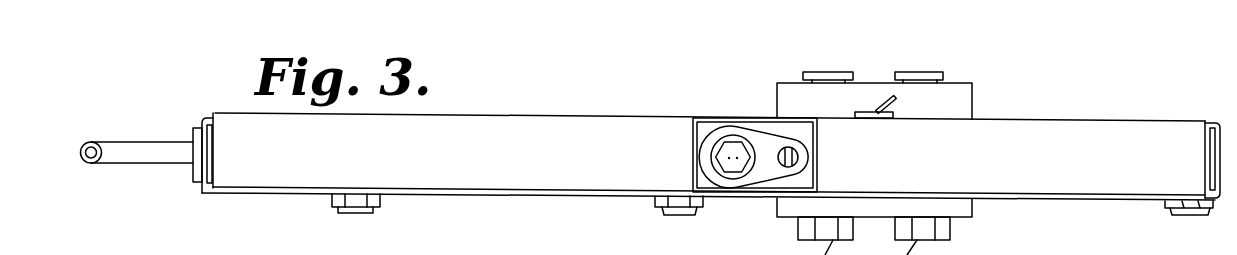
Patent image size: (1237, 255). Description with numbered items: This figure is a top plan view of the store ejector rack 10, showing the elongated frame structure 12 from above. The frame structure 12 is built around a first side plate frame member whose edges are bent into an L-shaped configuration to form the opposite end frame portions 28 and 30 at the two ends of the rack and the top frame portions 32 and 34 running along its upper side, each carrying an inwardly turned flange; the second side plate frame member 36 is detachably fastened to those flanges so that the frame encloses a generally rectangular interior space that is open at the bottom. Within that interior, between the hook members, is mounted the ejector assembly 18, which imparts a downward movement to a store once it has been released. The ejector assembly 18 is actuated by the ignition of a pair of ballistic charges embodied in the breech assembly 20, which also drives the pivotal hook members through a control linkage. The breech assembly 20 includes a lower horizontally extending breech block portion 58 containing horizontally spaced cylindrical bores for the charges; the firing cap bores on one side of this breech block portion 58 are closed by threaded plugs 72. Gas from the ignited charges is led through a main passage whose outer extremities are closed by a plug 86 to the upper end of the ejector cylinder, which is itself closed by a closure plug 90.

The store ejector rack 10 is at (641, 89).
The frame structure 12 is at (1148, 95).
The ejector assembly 18 is at (732, 197).
The breech assembly 20 is at (960, 82).
The end frame portion 28 is at (1222, 130).
The end frame portion 30 is at (195, 143).
The top frame portion 32 is at (1072, 95).
The top frame portion 34 is at (495, 105).
The second side plate frame member 36 is at (583, 196).
The breech block portion 58 is at (955, 212).
The threaded plug 72 is at (917, 73).
The plug 86 is at (800, 157).
The closure plug 90 is at (731, 150).